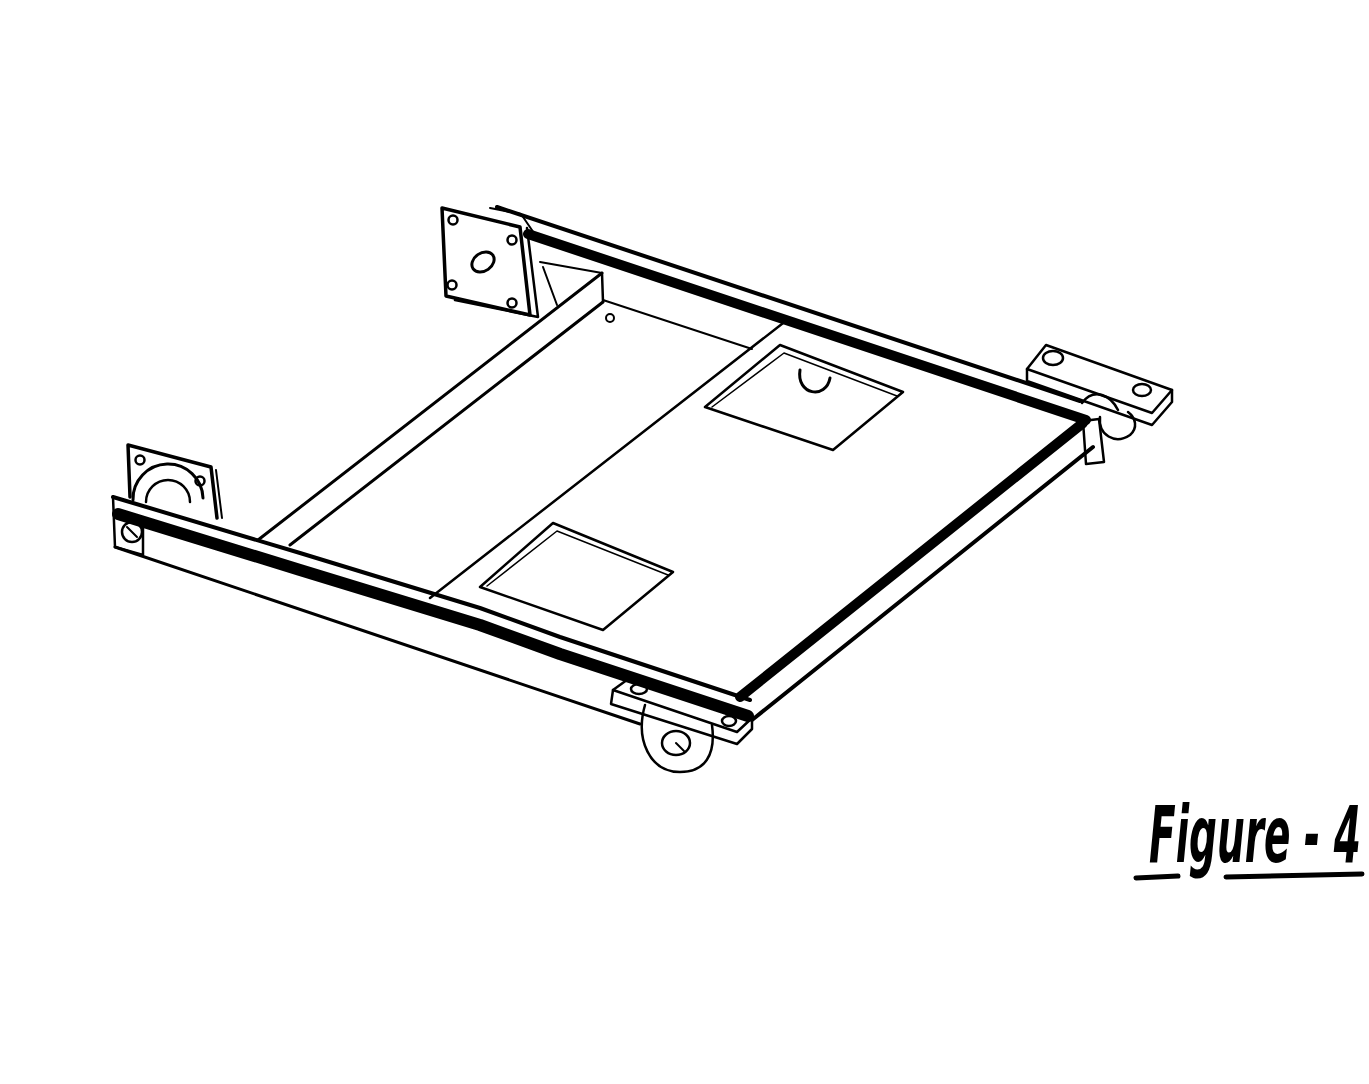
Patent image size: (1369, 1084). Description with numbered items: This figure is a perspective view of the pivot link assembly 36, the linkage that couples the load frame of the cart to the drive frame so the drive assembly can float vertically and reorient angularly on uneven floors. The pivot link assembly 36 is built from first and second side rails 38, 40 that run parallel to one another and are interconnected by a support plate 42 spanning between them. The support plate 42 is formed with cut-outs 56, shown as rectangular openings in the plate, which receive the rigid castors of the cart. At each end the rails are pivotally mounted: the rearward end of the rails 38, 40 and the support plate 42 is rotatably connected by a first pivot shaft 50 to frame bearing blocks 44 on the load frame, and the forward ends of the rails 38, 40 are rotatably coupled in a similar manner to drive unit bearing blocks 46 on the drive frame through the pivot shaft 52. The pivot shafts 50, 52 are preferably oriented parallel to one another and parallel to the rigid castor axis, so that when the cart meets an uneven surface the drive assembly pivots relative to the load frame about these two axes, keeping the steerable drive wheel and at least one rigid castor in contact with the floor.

The pivot link assembly 36 is at (790, 264).
The first side rail 38 is at (664, 307).
The second side rail 40 is at (410, 632).
The support plate 42 is at (777, 523).
The frame bearing blocks 44 is at (1092, 373).
The drive unit bearing blocks 46 is at (162, 443).
The first pivot shaft 50 is at (673, 748).
The pivot shaft 52 is at (140, 535).
The cut-outs 56 is at (830, 382).